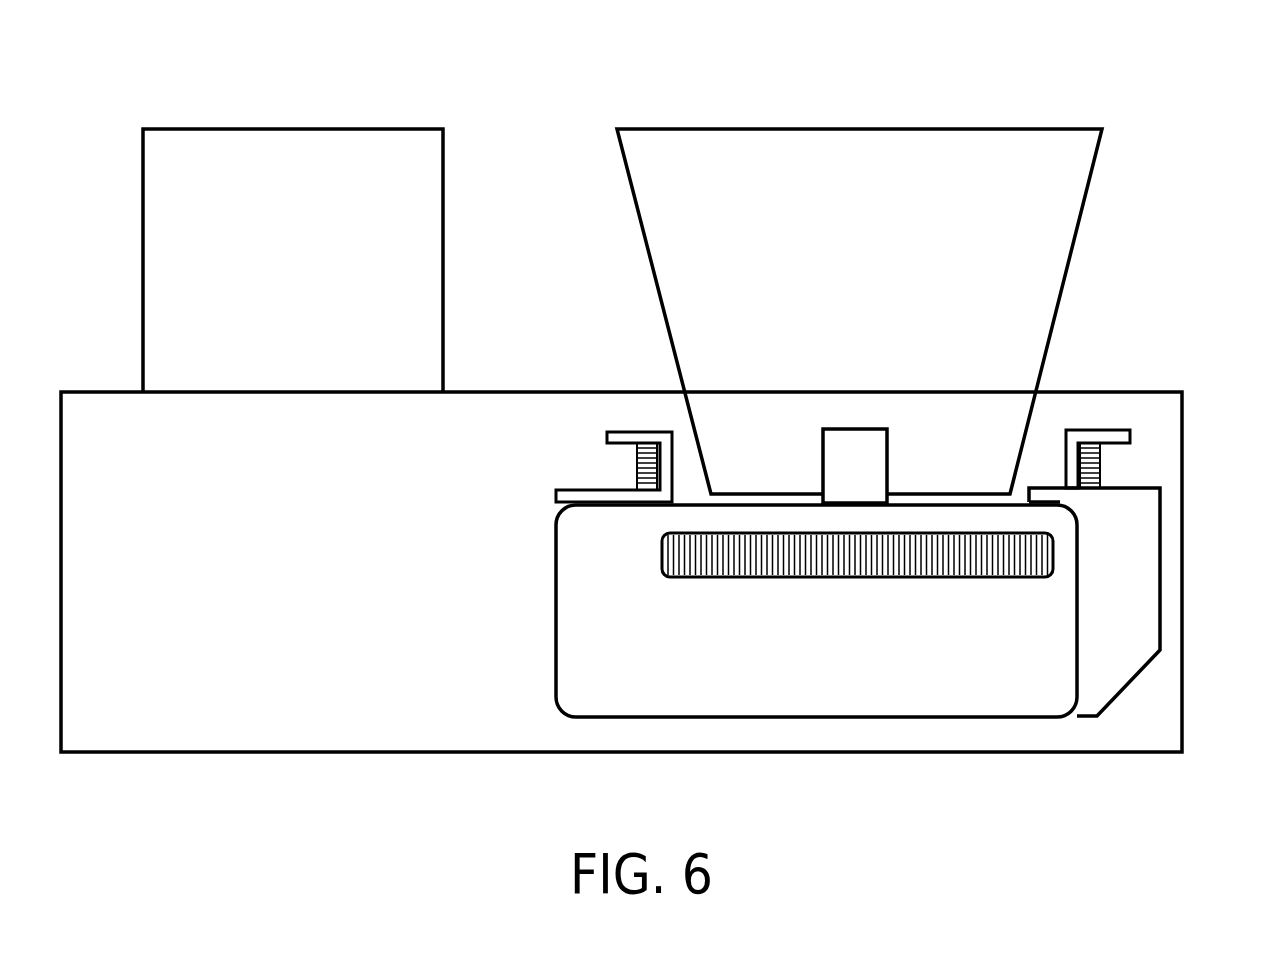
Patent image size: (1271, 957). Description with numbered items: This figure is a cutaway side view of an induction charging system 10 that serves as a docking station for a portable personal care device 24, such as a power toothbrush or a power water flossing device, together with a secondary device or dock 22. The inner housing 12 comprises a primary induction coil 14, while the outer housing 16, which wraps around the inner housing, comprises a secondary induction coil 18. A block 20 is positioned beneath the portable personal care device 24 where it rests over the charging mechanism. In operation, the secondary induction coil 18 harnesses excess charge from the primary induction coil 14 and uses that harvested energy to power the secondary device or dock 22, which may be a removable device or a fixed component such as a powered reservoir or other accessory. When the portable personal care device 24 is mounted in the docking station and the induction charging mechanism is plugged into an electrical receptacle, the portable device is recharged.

The induction charging system 10 is at (1092, 74).
The inner housing 12 is at (913, 719).
The primary induction coil 14 is at (717, 578).
The outer housing 16 is at (1150, 581).
The secondary induction coil 18 is at (1100, 466).
The block 20 is at (866, 429).
The secondary device or dock 22 is at (303, 129).
The portable personal care device 24 is at (744, 129).